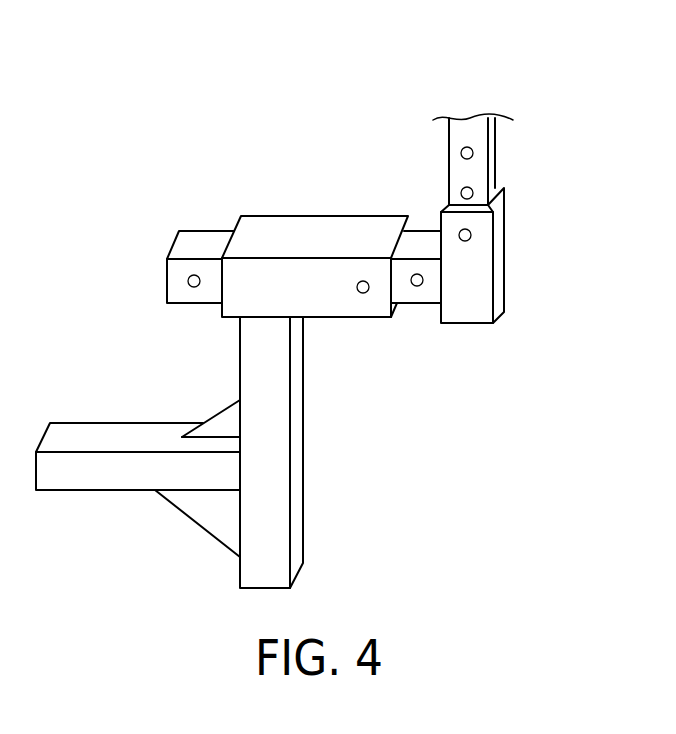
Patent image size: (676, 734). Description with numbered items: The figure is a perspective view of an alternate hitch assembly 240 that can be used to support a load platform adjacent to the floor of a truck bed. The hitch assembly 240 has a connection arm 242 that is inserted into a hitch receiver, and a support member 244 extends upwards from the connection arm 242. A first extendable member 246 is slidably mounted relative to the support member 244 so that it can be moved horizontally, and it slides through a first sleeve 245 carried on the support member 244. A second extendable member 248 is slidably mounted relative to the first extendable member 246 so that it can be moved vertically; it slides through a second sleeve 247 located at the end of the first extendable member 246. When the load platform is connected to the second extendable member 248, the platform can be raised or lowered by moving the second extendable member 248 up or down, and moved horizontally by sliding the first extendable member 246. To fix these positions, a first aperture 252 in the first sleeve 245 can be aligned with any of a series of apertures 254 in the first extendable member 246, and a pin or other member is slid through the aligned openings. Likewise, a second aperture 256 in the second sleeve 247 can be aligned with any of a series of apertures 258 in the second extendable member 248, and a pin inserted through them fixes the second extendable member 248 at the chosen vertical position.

The hitch assembly 240 is at (541, 90).
The connection arm 242 is at (115, 475).
The support member 244 is at (268, 498).
The first sleeve 245 is at (255, 282).
The first extendable member 246 is at (423, 303).
The second sleeve 247 is at (472, 257).
The second extendable member 248 is at (473, 173).
The first aperture 252 is at (365, 279).
The apertures 254 is at (188, 280).
The second aperture 256 is at (471, 235).
The apertures 258 is at (473, 152).